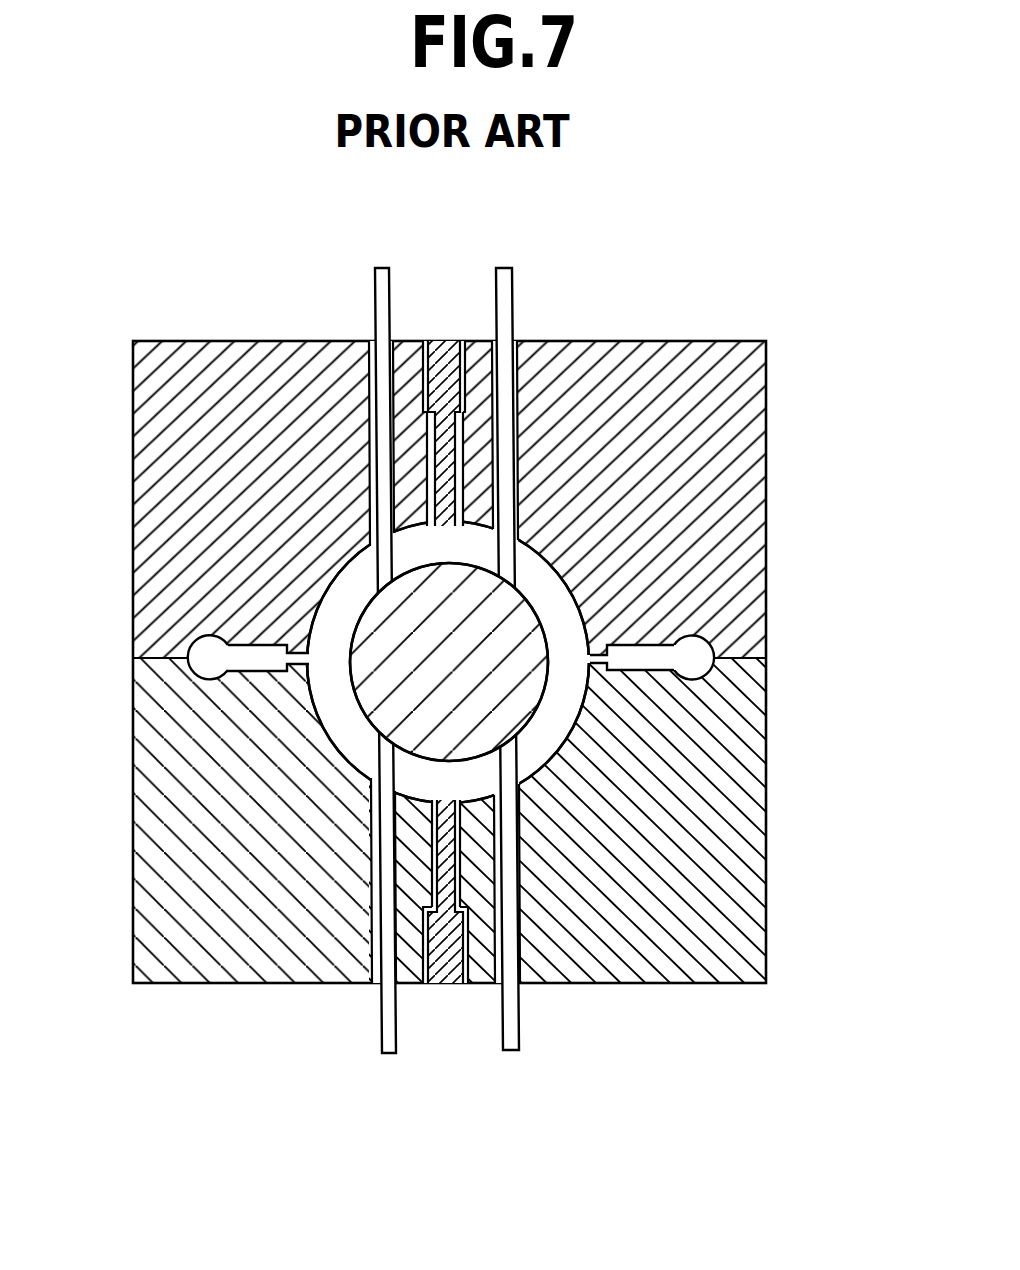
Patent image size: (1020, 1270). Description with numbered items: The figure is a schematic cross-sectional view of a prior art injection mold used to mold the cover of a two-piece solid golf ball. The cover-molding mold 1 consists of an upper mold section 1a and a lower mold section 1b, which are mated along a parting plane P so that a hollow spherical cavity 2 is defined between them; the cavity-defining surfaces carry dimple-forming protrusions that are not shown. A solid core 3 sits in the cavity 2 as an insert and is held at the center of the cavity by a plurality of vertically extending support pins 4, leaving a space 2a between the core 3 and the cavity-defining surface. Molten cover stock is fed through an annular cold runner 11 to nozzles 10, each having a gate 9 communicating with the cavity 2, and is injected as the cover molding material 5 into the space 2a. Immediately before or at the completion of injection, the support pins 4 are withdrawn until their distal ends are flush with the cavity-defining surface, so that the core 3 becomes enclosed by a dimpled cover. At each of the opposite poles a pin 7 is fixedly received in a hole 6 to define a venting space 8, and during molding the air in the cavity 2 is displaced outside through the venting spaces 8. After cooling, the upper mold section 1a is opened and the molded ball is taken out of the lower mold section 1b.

The cover-molding mold 1 is at (505, 596).
The upper mold section 1a is at (728, 503).
The lower mold section 1b is at (743, 788).
The hollow spherical cavity 2 is at (318, 630).
The space 2a is at (345, 593).
The solid core 3 is at (372, 664).
The support pins 4 is at (380, 292).
The cover molding material 5 is at (345, 720).
The hole 6 is at (423, 368).
The pin 7 is at (445, 357).
The venting space 8 is at (427, 458).
The gate 9 is at (640, 650).
The nozzle 10 is at (699, 660).
The annular cold runner 11 is at (730, 690).
The parting plane P is at (766, 658).